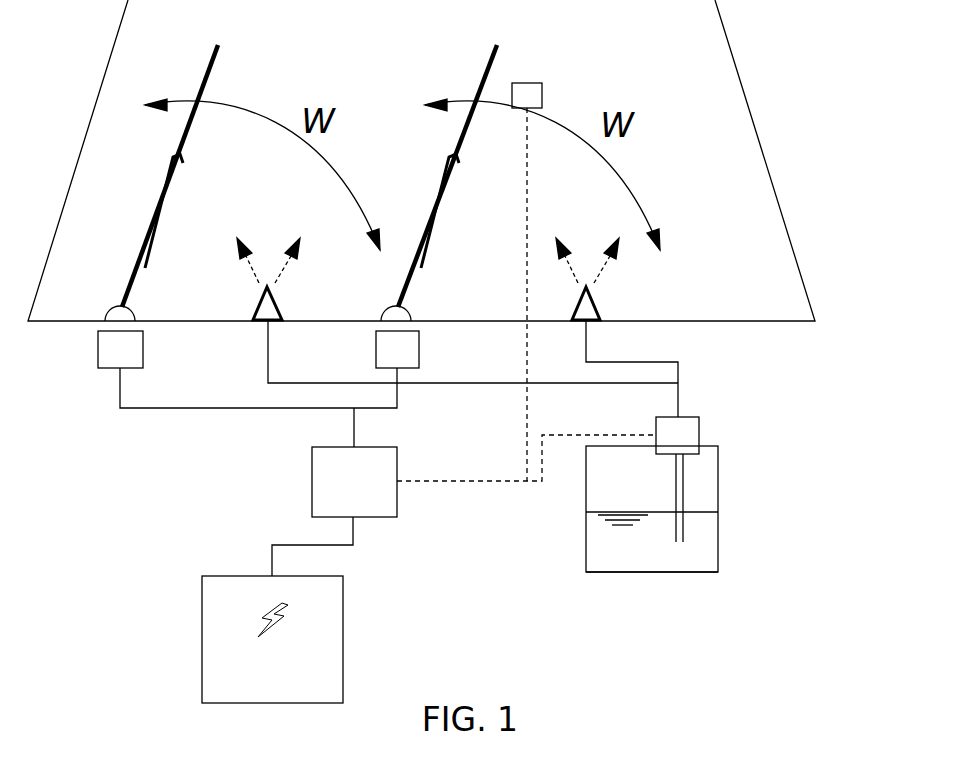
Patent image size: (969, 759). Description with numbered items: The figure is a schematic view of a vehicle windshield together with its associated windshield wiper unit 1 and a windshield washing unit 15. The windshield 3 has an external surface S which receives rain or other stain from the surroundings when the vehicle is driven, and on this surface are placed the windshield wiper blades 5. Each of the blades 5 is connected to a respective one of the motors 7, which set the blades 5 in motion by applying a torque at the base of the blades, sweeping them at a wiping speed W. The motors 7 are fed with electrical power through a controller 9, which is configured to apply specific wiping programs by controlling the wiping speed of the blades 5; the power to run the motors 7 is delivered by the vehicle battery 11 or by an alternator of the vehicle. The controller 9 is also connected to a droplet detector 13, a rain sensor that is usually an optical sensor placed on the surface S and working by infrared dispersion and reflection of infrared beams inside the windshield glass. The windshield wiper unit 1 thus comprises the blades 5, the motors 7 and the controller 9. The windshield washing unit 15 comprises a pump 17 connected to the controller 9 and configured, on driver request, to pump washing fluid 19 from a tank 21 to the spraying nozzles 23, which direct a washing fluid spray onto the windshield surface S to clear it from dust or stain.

The windshield wiper unit 1 is at (490, 582).
The windshield 3 is at (805, 342).
The windshield wiper blades 5 is at (113, 184).
The motors 7 is at (74, 350).
The controller 9 is at (354, 482).
The vehicle battery 11 is at (277, 610).
The droplet detector 13 is at (527, 57).
The windshield washing unit 15 is at (770, 562).
The pump 17 is at (677, 478).
The washing fluid 19 is at (652, 541).
The tank 21 is at (652, 596).
The spraying nozzles 23 is at (301, 302).